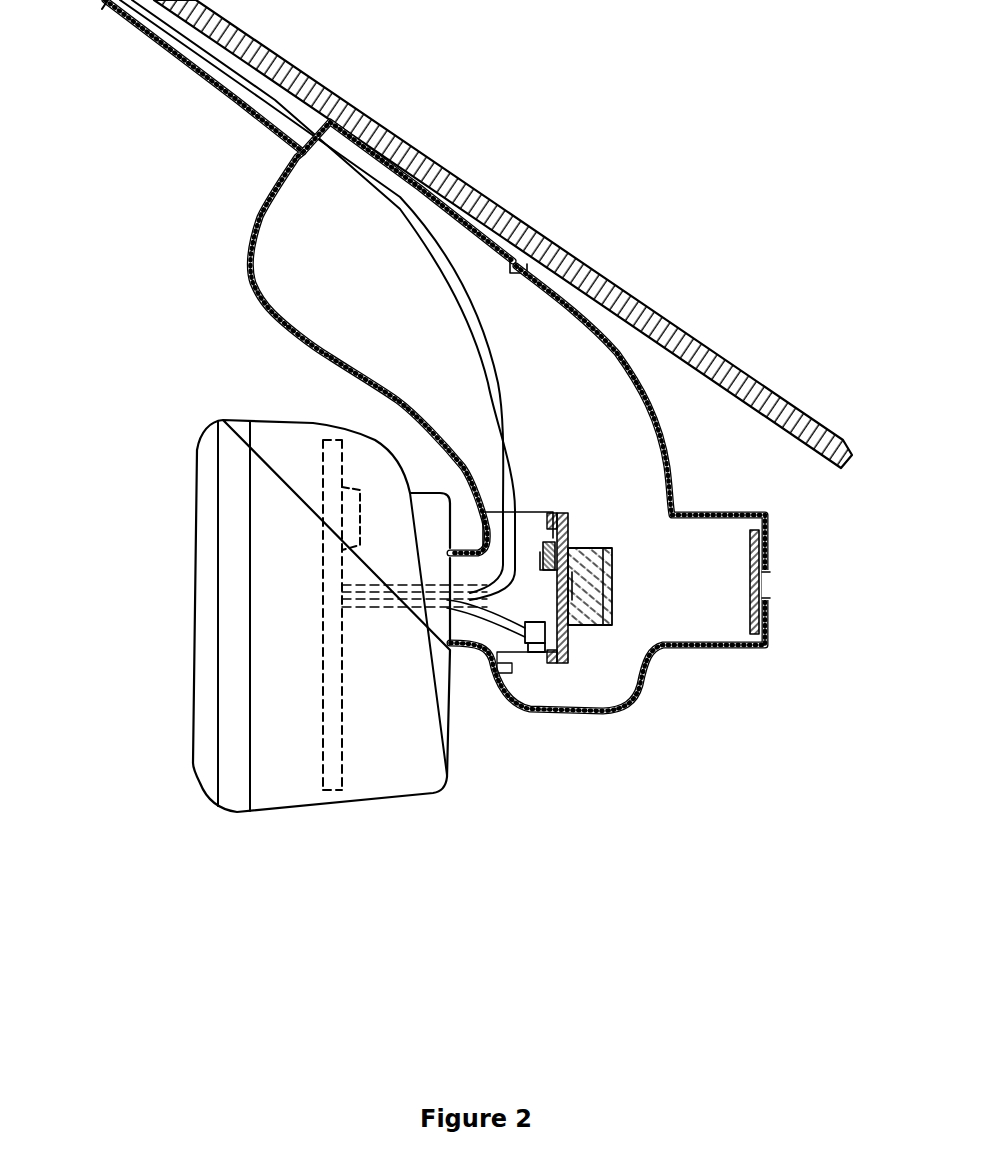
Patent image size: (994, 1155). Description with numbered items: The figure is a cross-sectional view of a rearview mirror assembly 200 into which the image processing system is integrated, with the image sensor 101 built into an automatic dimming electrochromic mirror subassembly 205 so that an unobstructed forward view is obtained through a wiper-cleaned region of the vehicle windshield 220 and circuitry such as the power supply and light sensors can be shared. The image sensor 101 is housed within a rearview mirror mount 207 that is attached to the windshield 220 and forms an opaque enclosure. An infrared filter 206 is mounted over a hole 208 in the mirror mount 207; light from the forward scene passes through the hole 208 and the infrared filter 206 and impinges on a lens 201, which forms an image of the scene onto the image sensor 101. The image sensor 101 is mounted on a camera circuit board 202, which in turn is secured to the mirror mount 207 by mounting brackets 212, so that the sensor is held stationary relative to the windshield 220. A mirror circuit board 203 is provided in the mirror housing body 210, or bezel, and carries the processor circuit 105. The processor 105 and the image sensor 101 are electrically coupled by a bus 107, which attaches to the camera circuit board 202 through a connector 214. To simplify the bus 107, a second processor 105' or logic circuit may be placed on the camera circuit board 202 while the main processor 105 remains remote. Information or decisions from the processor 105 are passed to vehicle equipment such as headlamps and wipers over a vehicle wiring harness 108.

The windshield 220 is at (555, 224).
The vehicle wiring harness 108 is at (496, 376).
The rearview mirror mount 207 is at (291, 234).
The automatic dimming electrochromic mirror subassembly 205 is at (146, 409).
The mirror housing body 210 is at (193, 693).
The rearview mirror assembly 200 is at (231, 820).
The mirror circuit board 203 is at (340, 728).
The processor circuit 105 is at (329, 469).
The image sensor 101 is at (553, 583).
The bus 107 is at (472, 655).
The connector 214 is at (528, 655).
The mounting brackets 212 is at (490, 506).
The second processor 105' is at (573, 494).
The camera circuit board 202 is at (570, 543).
The lens 201 is at (614, 583).
The infrared filter 206 is at (762, 583).
The hole 208 is at (772, 578).